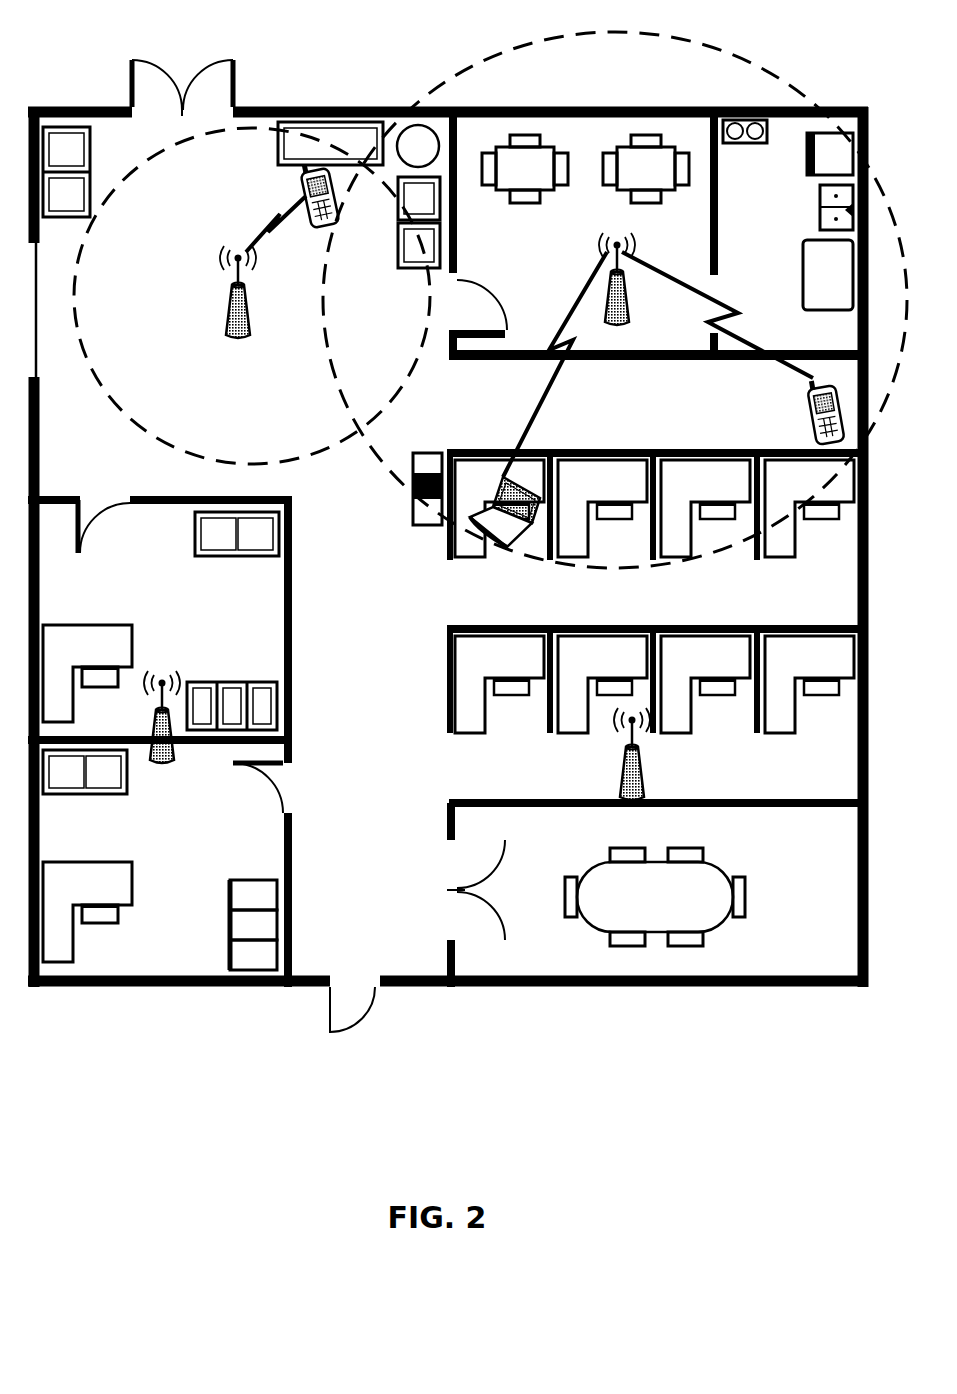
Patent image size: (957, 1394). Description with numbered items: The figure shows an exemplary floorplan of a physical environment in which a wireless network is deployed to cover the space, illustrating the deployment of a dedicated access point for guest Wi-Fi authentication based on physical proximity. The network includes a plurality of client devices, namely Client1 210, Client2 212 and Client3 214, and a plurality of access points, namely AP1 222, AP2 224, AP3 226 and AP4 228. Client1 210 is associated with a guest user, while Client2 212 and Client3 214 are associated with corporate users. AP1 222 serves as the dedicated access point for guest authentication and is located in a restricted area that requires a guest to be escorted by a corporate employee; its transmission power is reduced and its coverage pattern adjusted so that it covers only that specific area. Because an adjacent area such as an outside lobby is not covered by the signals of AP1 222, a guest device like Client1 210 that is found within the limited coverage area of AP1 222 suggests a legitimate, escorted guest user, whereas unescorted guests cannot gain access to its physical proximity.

The Client1 210 is at (334, 218).
The Client2 212 is at (734, 451).
The Client3 214 is at (491, 617).
The AP1 222 is at (221, 391).
The AP2 224 is at (637, 351).
The AP3 226 is at (147, 812).
The AP4 228 is at (654, 794).